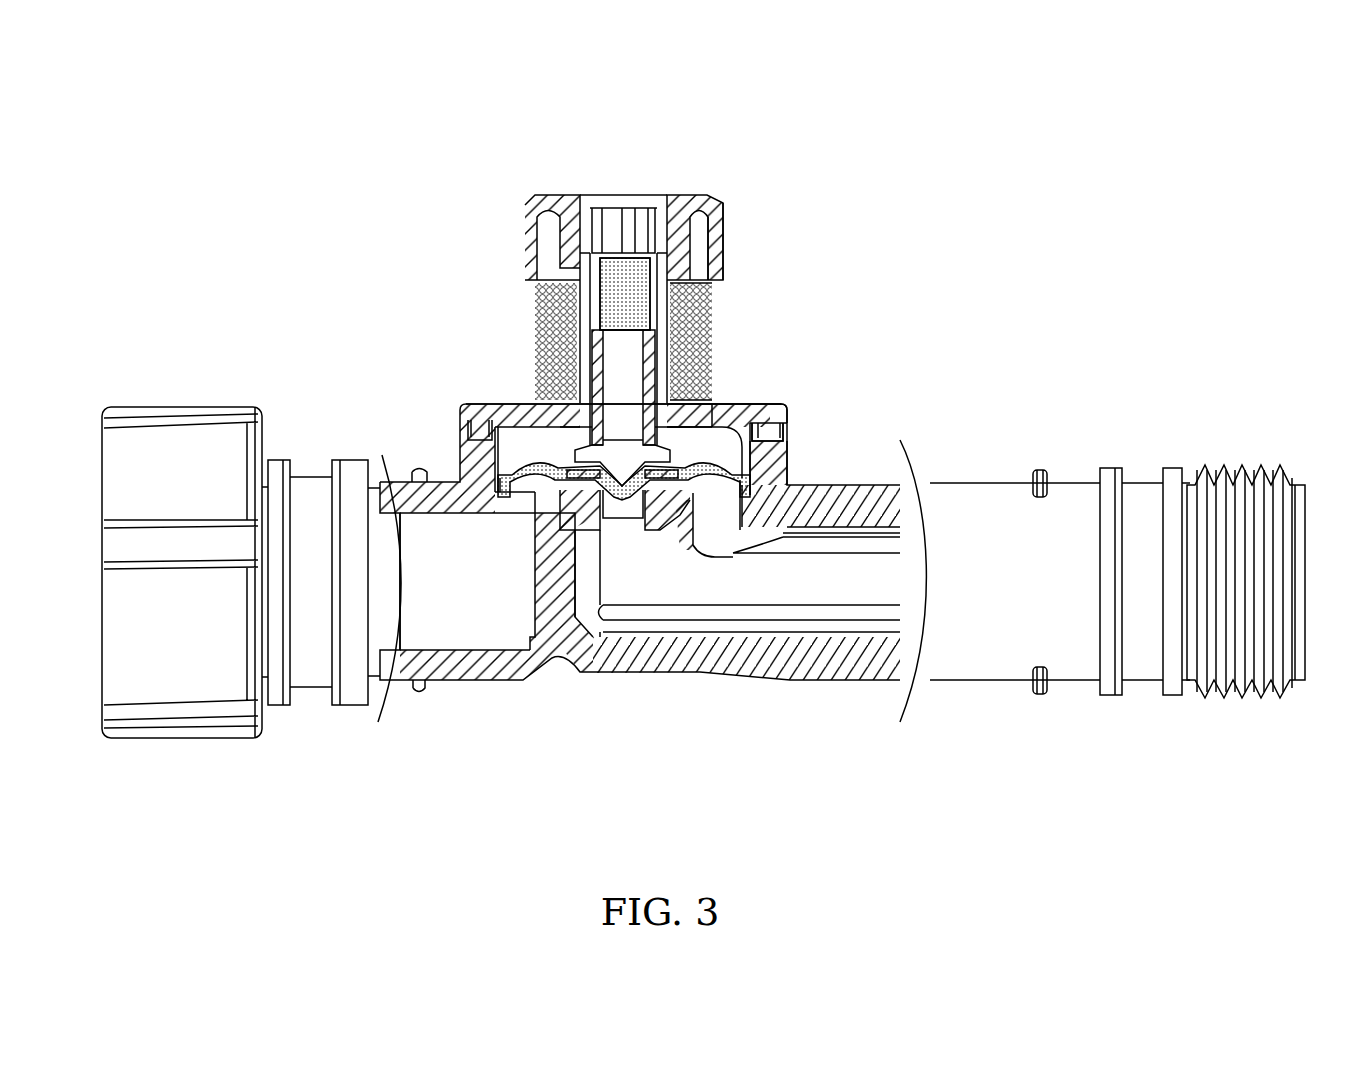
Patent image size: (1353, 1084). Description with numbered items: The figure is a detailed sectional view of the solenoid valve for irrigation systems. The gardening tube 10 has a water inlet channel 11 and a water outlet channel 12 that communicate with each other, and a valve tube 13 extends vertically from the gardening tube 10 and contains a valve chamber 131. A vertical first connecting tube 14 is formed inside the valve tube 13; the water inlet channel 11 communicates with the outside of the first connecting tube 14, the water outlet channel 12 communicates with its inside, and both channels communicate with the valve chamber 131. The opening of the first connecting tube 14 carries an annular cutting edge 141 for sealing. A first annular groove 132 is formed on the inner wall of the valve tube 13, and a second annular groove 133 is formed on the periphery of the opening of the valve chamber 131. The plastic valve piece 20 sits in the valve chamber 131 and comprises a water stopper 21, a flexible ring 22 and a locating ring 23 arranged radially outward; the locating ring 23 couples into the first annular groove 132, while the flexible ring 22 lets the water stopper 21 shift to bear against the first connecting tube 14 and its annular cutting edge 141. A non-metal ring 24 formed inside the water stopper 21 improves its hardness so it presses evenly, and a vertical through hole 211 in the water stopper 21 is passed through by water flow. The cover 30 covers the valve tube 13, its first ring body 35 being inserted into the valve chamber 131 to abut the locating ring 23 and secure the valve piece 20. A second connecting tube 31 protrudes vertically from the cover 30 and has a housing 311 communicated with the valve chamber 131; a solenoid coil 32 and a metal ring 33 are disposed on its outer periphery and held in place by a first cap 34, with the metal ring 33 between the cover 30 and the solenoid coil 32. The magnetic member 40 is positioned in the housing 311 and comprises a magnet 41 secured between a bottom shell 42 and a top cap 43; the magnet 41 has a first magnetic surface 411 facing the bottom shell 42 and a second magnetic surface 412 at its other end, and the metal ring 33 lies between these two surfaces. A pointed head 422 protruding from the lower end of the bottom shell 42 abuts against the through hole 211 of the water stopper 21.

The gardening tube 10 is at (968, 716).
The water inlet channel 11 is at (443, 630).
The water outlet channel 12 is at (828, 585).
The valve tube 13 is at (362, 472).
The valve chamber 131 is at (710, 397).
The first annular groove 132 is at (772, 508).
The second annular groove 133 is at (772, 426).
The first connecting tube 14 is at (537, 552).
The annular cutting edge 141 is at (590, 555).
The valve piece 20 is at (462, 437).
The water stopper 21 is at (468, 400).
The vertical through hole 211 is at (640, 522).
The flexible ring 22 is at (773, 407).
The locating ring 23 is at (782, 460).
The non-metal ring 24 is at (695, 605).
The cover 30 is at (455, 396).
The second connecting tube 31 is at (597, 242).
The housing 311 is at (597, 197).
The solenoid coil 32 is at (715, 300).
The metal ring 33 is at (717, 250).
The first cap 34 is at (707, 195).
The first ring body 35 is at (468, 500).
The magnetic member 40 is at (583, 327).
The magnet 41 is at (683, 230).
The first magnetic surface 411 is at (707, 332).
The second magnetic surface 412 is at (598, 217).
The bottom shell 42 is at (590, 352).
The pointed head 422 is at (660, 392).
The top cap 43 is at (597, 235).